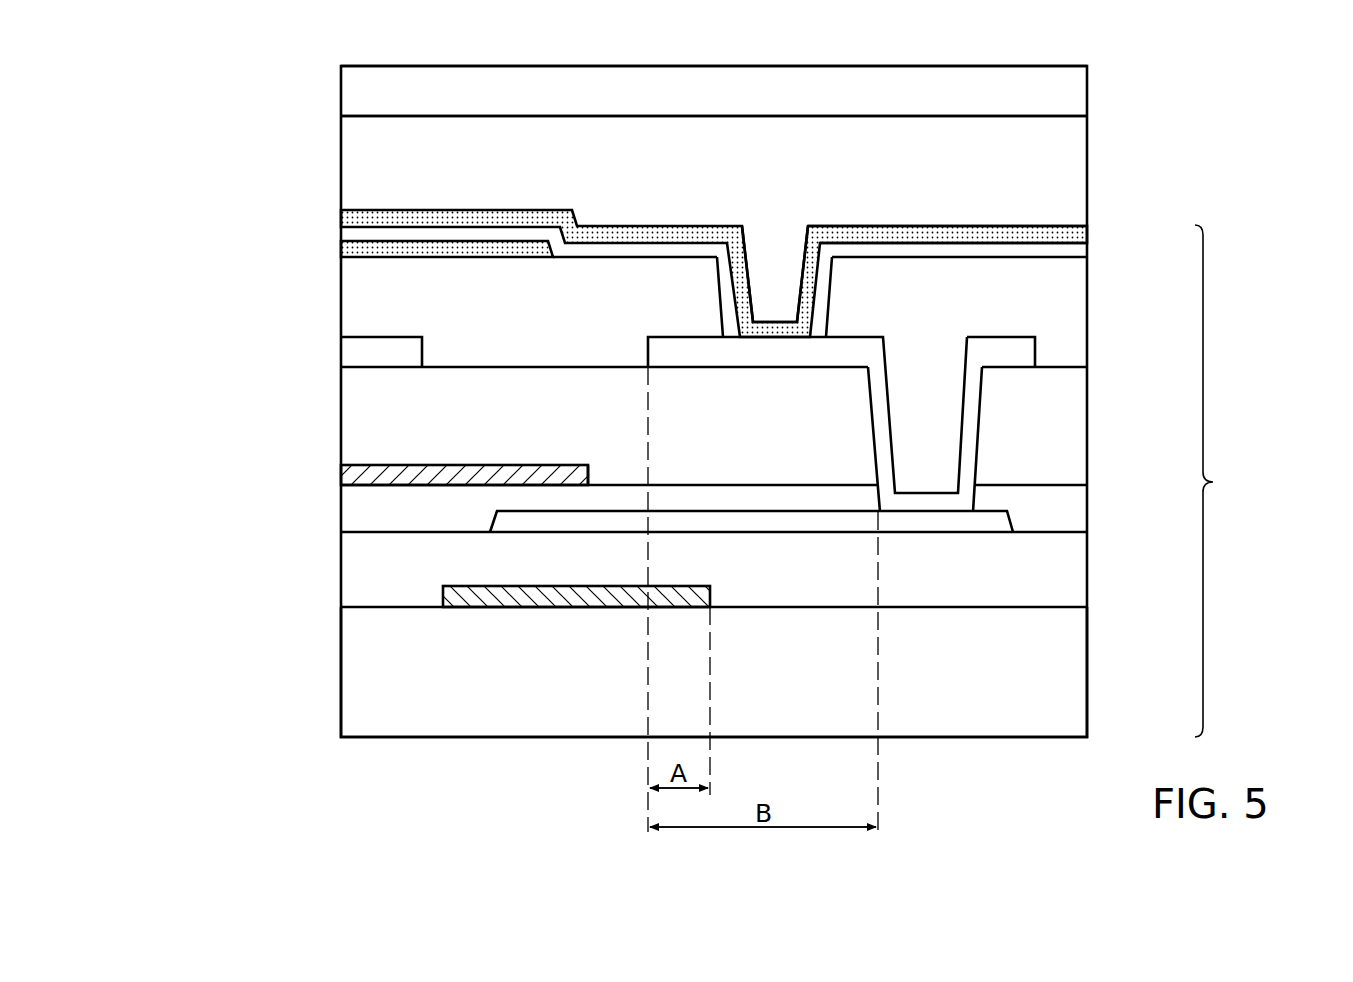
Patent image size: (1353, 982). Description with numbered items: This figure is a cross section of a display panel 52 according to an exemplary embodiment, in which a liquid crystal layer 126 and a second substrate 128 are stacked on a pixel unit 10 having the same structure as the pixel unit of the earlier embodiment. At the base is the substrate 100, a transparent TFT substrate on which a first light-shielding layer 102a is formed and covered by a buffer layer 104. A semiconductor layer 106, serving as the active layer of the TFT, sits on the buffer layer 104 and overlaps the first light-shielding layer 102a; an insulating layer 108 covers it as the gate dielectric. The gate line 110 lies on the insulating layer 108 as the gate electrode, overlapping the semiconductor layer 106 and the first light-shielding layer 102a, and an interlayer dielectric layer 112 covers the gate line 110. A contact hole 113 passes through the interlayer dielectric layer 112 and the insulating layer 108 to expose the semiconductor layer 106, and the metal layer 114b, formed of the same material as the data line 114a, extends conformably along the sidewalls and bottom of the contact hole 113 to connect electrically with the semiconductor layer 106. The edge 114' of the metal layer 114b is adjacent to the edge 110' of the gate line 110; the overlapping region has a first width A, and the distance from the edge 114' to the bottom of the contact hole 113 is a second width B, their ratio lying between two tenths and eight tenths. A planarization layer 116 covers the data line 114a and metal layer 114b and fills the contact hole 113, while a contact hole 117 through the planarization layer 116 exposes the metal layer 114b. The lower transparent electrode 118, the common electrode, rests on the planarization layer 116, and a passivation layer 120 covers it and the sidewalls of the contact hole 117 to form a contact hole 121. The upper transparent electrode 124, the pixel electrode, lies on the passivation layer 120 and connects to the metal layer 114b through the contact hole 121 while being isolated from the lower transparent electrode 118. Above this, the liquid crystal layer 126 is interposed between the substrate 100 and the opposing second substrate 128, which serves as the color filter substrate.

The display panel 52 is at (226, 95).
The second substrate 128 is at (1068, 88).
The liquid crystal layer 126 is at (1068, 160).
The upper transparent electrode 124 is at (357, 220).
The passivation layer 120 is at (1068, 248).
The contact hole 121 is at (771, 257).
The lower transparent electrode 118 is at (357, 252).
The planarization layer 116 is at (1068, 320).
The contact hole 117 is at (834, 285).
The data line 114a is at (358, 353).
The metal layer 114b is at (1012, 352).
The edge of the metal layer 114' is at (777, 318).
The interlayer dielectric layer 112 is at (1068, 426).
The contact hole 113 is at (984, 429).
The gate line 110 is at (422, 474).
The edge of the gate line 110' is at (653, 314).
The insulating layer 108 is at (358, 508).
The semiconductor layer 106 is at (957, 522).
The buffer layer 104 is at (1068, 566).
The first light-shielding layer 102a is at (512, 608).
The substrate 100 is at (813, 686).
The pixel unit 10 is at (1225, 481).